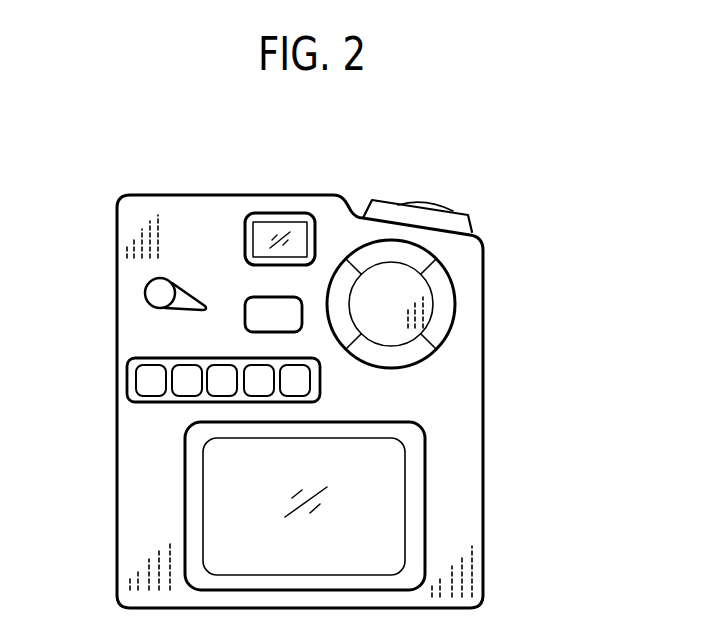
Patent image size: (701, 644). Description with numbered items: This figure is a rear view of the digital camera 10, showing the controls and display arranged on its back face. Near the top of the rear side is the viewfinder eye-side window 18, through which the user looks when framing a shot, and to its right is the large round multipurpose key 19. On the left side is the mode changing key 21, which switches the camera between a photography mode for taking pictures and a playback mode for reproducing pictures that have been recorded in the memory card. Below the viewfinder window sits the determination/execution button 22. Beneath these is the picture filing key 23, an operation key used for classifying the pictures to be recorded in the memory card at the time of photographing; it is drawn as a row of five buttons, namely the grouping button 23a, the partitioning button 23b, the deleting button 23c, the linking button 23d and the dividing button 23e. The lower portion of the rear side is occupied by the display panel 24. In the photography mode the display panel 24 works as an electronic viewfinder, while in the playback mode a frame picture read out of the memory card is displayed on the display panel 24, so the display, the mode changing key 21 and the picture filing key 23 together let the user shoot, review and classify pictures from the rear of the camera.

The digital camera 10 is at (300, 180).
The viewfinder eye-side window 18 is at (262, 228).
The multipurpose key 19 is at (483, 310).
The mode changing key 21 is at (160, 293).
The determination/execution button 22 is at (263, 305).
The picture filing key 23 is at (258, 428).
The grouping button 23a is at (152, 388).
The partitioning button 23b is at (187, 392).
The deleting button 23c is at (220, 390).
The linking button 23d is at (260, 373).
The dividing button 23e is at (302, 382).
The display panel 24 is at (382, 487).